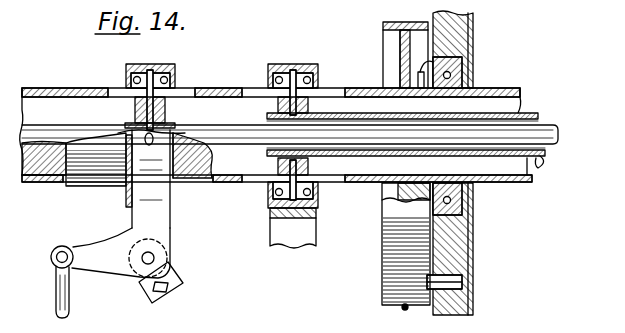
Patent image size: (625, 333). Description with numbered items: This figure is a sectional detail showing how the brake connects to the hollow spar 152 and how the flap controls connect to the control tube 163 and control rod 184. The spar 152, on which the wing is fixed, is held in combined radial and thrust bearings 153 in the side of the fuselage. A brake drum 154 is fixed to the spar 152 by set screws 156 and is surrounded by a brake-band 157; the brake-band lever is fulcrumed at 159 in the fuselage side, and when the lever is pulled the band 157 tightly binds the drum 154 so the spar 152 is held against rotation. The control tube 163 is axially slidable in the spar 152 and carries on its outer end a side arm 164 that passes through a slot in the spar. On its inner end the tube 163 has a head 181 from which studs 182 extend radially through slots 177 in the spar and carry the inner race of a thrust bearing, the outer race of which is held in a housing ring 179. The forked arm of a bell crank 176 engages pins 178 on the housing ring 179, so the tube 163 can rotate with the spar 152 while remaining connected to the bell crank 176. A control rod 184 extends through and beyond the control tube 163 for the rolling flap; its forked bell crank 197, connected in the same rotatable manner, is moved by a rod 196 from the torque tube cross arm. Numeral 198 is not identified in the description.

The hollow spar 152 is at (520, 88).
The combined radial and thrust bearings 153 is at (462, 209).
The brake drum 154 is at (412, 45).
The set screws 156 is at (432, 60).
The brake-band 157 is at (402, 22).
The fulcrum 159 is at (462, 280).
The control tube 163 is at (542, 162).
The side arm 164 is at (404, 309).
The forked bell crank 176 is at (308, 238).
The slots 177 is at (110, 90).
The pins 178 is at (128, 132).
The housing ring 179 is at (172, 60).
The head 181 is at (166, 110).
The studs 182 is at (150, 72).
The control rod 184 is at (558, 132).
The rod 196 is at (56, 298).
The forked bell crank 197 is at (126, 272).
The lever 198 is at (266, 323).